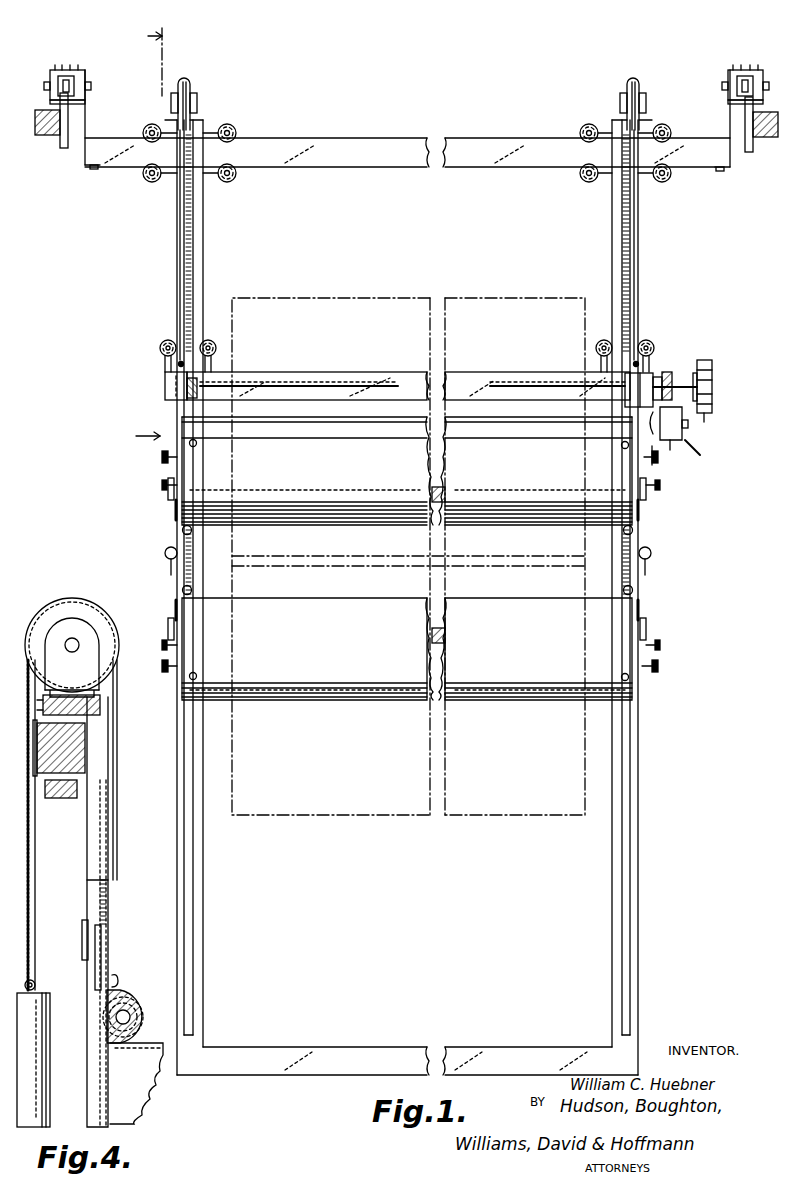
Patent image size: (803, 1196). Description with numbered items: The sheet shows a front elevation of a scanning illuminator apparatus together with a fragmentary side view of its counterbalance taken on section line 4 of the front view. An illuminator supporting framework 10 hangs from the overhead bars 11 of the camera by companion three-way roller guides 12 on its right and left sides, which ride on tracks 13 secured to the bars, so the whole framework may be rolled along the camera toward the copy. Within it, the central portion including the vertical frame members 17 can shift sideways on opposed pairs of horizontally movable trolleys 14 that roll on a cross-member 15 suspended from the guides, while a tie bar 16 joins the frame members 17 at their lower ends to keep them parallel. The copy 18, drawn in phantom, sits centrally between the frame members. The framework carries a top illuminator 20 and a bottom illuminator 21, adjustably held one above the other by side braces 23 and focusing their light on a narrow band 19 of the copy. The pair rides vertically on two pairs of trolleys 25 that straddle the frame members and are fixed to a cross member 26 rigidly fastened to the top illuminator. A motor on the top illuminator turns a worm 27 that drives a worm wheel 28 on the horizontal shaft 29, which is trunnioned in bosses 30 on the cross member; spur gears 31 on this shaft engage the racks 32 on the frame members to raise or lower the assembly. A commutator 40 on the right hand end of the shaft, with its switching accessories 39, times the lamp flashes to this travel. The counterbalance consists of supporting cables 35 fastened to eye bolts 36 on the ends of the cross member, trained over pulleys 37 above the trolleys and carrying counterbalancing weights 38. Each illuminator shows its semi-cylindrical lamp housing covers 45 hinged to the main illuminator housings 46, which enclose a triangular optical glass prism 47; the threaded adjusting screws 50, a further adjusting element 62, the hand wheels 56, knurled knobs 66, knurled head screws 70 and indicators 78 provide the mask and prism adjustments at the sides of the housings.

In FIG. 1, the section line 4— 4 is at (660, 460).
In FIG. 1, the illuminator supporting framework 10 is at (662, 325).
In FIG. 1, the overhead bars 11 is at (42, 137).
In FIG. 1, the three-way roller guides 12 is at (76, 85).
In FIG. 1, the tracks 13 is at (65, 150).
In FIG. 1, the horizontally movable trolleys 14 is at (222, 170).
In FIG. 4, the horizontally movable trolleys 14 is at (100, 707).
In FIG. 1, the cross-member 15 is at (390, 137).
In FIG. 4, the cross-member 15 is at (85, 740).
In FIG. 1, the tie bar 16 is at (524, 1053).
In FIG. 1, the vertical frame members 17 is at (203, 241).
In FIG. 4, the vertical frame members 17 is at (108, 755).
In FIG. 1, the copy 18 is at (344, 816).
In FIG. 1, the narrow band 19 is at (346, 552).
In FIG. 1, the top illuminator 20 is at (352, 481).
In FIG. 4, the top illuminator 20 is at (128, 1098).
In FIG. 1, the bottom illuminator 21 is at (340, 649).
In FIG. 1, the side braces 23 is at (168, 571).
In FIG. 1, the trolleys 25 is at (165, 363).
In FIG. 4, the trolleys 25 is at (95, 973).
In FIG. 1, the cross member 26 is at (404, 378).
In FIG. 1, the worm 27 is at (640, 402).
In FIG. 1, the worm wheel 28 is at (668, 376).
In FIG. 1, the horizontal shaft 29 is at (511, 384).
In FIG. 1, the bosses 30 is at (175, 394).
In FIG. 4, the bosses 30 is at (142, 1032).
In FIG. 1, the spur gears 31 is at (194, 401).
In FIG. 4, the spur gears 31 is at (140, 1003).
In FIG. 1, the rack 32 is at (193, 296).
In FIG. 4, the rack 32 is at (108, 820).
In FIG. 1, the supporting cables 35 is at (180, 239).
In FIG. 4, the supporting cables 35 is at (35, 860).
In FIG. 1, the eye bolts 36 is at (179, 366).
In FIG. 4, the eye bolts 36 is at (118, 985).
In FIG. 1, the pulleys 37 is at (190, 90).
In FIG. 4, the pulleys 37 is at (72, 600).
In FIG. 4, the counterbalancing weights 38 is at (44, 1055).
In FIG. 1, the switching accessories 39 is at (688, 424).
In FIG. 1, the commutator 40 is at (712, 386).
In FIG. 1, the semi-cylindrical lamp housing covers 45 is at (384, 428).
In FIG. 1, the main illuminator housings 46 is at (272, 524).
In FIG. 1, the triangular optical glass prism 47 is at (446, 488).
In FIG. 1, the threaded adjusting screws 50 is at (197, 444).
In FIG. 1, the hand wheels 56 is at (168, 495).
In FIG. 1, the clamp screw 62 is at (162, 460).
In FIG. 1, the knurled knobs 66 is at (162, 486).
In FIG. 1, the knurled head screws 70 is at (182, 528).
In FIG. 1, the indicators 78 is at (172, 615).